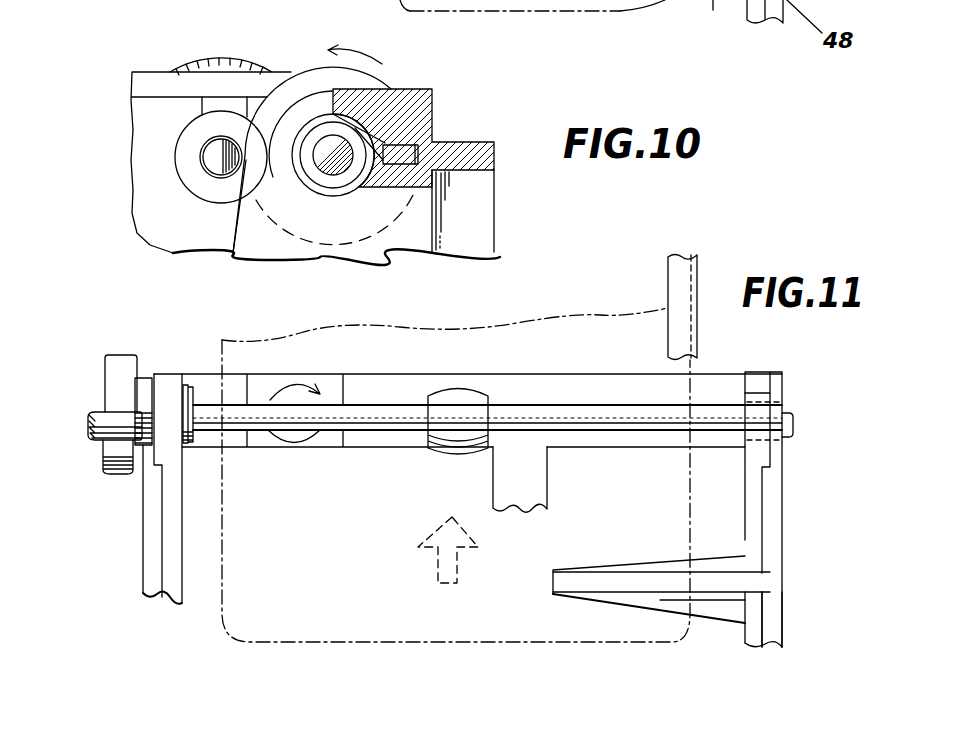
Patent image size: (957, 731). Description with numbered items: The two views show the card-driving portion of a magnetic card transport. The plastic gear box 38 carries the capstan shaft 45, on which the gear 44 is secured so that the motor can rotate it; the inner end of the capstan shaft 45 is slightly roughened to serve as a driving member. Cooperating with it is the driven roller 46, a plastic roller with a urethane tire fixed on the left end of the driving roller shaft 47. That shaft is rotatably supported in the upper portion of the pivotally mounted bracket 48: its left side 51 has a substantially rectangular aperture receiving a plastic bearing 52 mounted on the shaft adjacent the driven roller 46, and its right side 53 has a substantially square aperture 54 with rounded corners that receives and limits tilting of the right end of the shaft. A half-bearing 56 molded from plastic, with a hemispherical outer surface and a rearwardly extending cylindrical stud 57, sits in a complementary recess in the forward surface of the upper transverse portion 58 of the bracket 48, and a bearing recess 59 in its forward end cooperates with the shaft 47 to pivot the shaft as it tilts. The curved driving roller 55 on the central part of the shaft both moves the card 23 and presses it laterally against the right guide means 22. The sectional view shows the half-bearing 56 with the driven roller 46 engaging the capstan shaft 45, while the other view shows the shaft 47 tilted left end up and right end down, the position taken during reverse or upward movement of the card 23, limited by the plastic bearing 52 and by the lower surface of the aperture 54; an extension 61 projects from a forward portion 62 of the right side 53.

In FIG. 11, the right guide means 22 is at (680, 257).
In FIG. 11, the card 23 is at (617, 328).
In FIG. 10, the gear box 38 is at (142, 119).
In FIG. 10, the gear 44 is at (228, 56).
In FIG. 10, the capstan shaft 45 is at (210, 158).
In FIG. 11, the capstan shaft 45 is at (93, 441).
In FIG. 10, the driven roller 46 is at (370, 82).
In FIG. 11, the driven roller 46 is at (118, 358).
In FIG. 10, the driving roller shaft 47 is at (330, 168).
In FIG. 11, the driving roller shaft 47 is at (580, 431).
In FIG. 10, the bracket 48 is at (460, 244).
In FIG. 11, the bracket 48 is at (777, 622).
In FIG. 10, the left side of bracket 51 is at (270, 250).
In FIG. 11, the left side of bracket 51 is at (148, 550).
In FIG. 10, the rectangular aperture / plastic bearing 52 is at (318, 178).
In FIG. 11, the rectangular aperture / plastic bearing 52 is at (190, 386).
In FIG. 11, the right side of bracket 53 is at (772, 522).
In FIG. 11, the square aperture 54 is at (786, 398).
In FIG. 11, the driving roller 55 is at (447, 449).
In FIG. 10, the half-bearing 56 is at (370, 140).
In FIG. 11, the half-bearing 56 is at (300, 438).
In FIG. 10, the cylindrical stud 57 is at (405, 163).
In FIG. 10, the upper transverse portion 58 is at (432, 92).
In FIG. 11, the upper transverse portion 58 is at (507, 383).
In FIG. 10, the bearing recess 59 is at (333, 170).
In FIG. 11, the extension 61 is at (663, 580).
In FIG. 11, the forward portion 62 is at (768, 582).